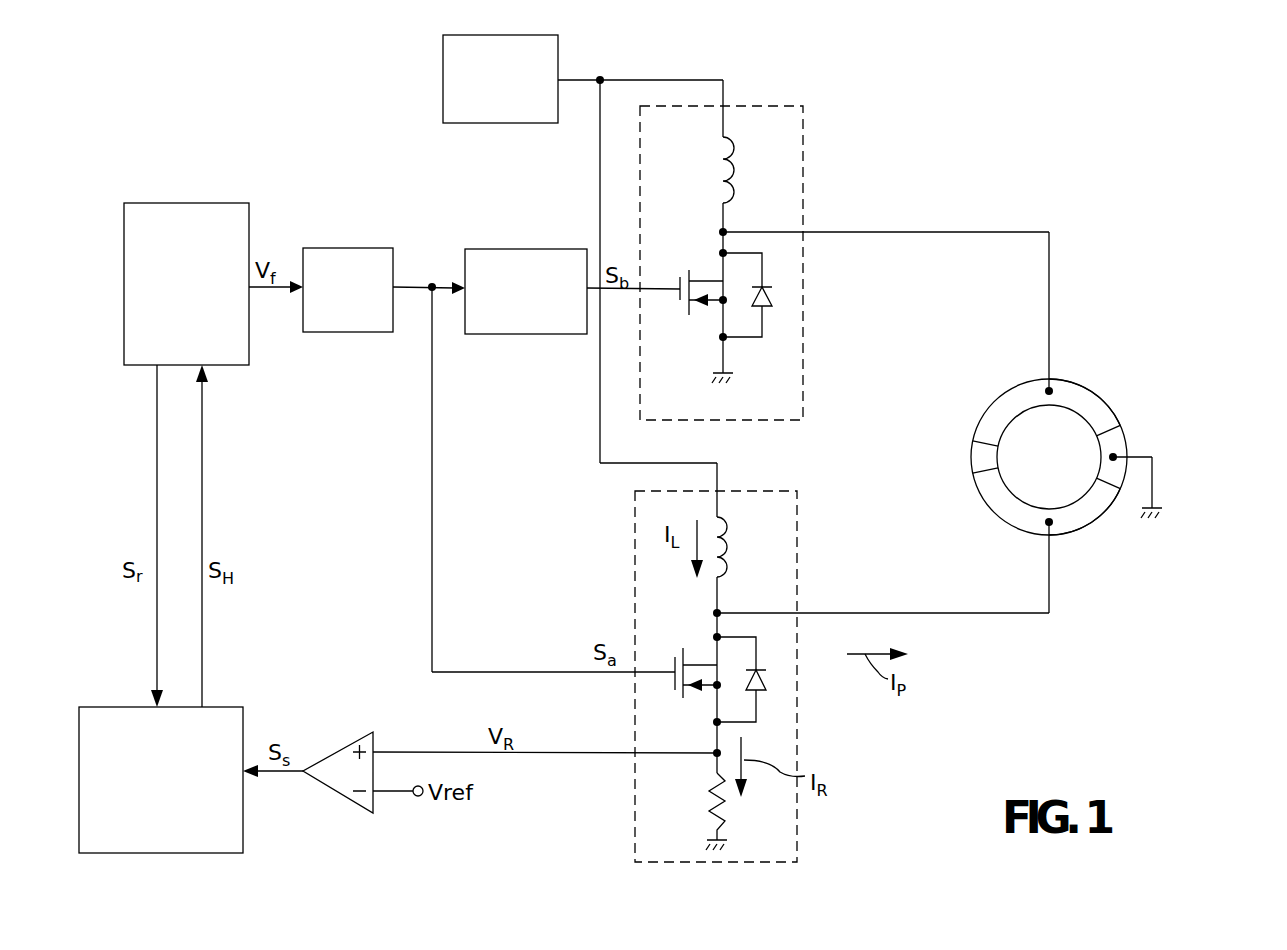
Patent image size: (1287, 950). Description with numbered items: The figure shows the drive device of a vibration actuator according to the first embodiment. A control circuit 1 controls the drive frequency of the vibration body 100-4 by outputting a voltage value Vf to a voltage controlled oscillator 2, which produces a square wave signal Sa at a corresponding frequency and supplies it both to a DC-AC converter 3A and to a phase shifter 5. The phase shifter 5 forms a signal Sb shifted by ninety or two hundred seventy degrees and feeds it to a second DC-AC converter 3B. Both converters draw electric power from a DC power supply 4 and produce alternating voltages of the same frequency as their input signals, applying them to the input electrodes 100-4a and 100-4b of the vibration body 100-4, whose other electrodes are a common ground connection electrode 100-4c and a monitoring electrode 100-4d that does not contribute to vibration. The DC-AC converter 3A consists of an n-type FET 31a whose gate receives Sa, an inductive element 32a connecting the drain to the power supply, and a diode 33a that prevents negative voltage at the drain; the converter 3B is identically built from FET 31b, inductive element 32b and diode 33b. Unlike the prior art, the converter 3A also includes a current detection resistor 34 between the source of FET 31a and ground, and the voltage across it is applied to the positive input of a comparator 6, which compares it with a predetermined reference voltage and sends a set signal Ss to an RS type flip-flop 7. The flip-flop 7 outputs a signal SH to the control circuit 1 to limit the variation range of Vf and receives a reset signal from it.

The control circuit 1 is at (178, 203).
The voltage controlled oscillator 2 is at (357, 248).
The DC-AC converter 3A is at (800, 513).
The DC-AC converter 3B is at (775, 105).
The DC power supply 4 is at (443, 68).
The phase shifter 5 is at (535, 249).
The comparator 6 is at (335, 750).
The RS type flip-flop 7 is at (125, 707).
The n-type field effect transistor 31a is at (674, 652).
The n-type field effect transistor 31b is at (683, 314).
The inductive element 32a is at (730, 572).
The inductive element 32b is at (735, 185).
The diode 33a is at (765, 690).
The diode 33b is at (770, 296).
The resistor 34 is at (708, 785).
The vibration body 100-4 is at (1104, 334).
The input electrode 100-4a is at (1088, 517).
The input electrode 100-4b is at (1088, 397).
The common ground connection electrode 100-4c is at (1123, 445).
The monitoring electrode 100-4d is at (973, 450).